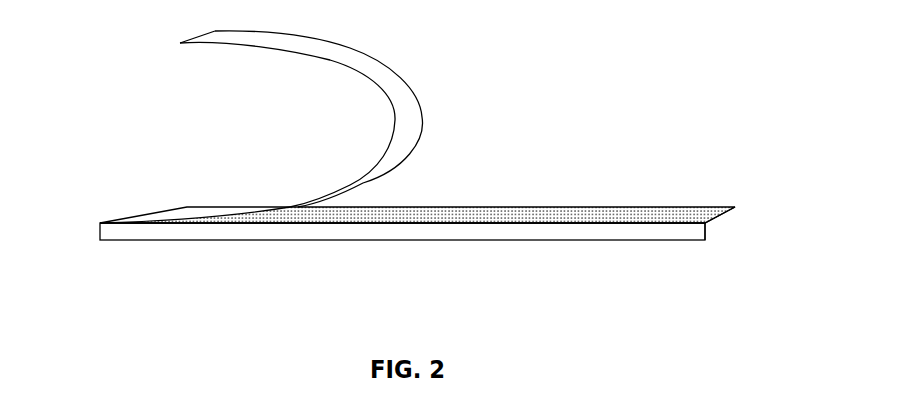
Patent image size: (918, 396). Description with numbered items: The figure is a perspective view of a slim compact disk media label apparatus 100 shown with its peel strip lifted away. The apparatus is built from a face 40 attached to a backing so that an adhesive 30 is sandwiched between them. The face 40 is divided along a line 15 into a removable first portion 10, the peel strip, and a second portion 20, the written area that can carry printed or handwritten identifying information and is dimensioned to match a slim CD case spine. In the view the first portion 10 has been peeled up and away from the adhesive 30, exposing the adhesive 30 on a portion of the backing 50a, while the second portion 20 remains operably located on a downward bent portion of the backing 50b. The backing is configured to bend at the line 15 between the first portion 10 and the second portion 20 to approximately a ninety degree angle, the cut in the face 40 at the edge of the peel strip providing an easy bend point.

The slim compact disk media label apparatus 100 is at (432, 153).
The first portion of the face 10 is at (340, 55).
The line 15 is at (628, 224).
The second portion of the face 20 is at (465, 232).
The adhesive 30 is at (420, 207).
The face 40 is at (142, 183).
The portion of the backing 50a is at (705, 208).
The downward bent portion of the backing 50b is at (705, 234).